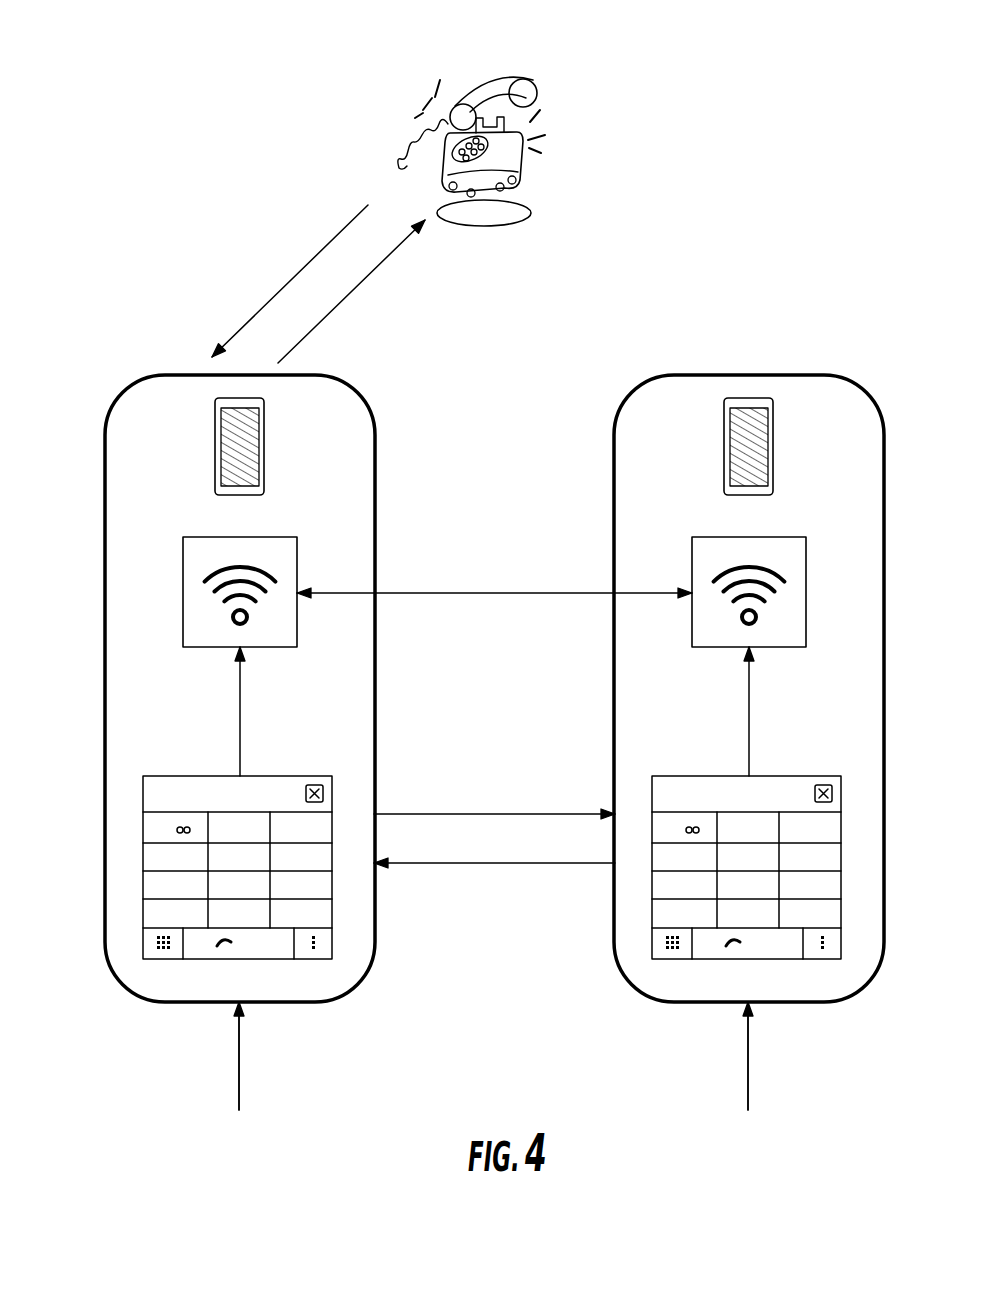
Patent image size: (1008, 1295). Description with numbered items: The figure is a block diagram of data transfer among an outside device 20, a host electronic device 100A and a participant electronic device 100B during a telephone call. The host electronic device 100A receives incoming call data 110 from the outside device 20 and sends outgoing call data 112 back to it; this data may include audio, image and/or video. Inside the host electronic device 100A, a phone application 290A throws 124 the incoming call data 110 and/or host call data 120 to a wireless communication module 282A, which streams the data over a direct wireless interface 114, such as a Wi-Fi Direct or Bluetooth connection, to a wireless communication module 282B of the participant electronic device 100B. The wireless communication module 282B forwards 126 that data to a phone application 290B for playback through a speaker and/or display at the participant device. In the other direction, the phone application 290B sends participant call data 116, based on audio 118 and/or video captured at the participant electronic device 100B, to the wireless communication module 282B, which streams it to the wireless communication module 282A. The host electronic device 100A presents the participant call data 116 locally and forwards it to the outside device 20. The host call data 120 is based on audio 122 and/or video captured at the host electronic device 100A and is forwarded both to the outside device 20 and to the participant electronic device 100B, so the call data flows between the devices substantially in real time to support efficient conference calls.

The outside device 20 is at (567, 72).
The incoming call data 110 is at (283, 287).
The outgoing call data 112 is at (353, 290).
The host electronic device 100A is at (322, 496).
The participant electronic device 100B is at (831, 496).
The wireless communication module 282A is at (183, 587).
The wireless communication module 282B is at (692, 612).
The direct wireless interface 114 is at (457, 593).
The participant call data 116 is at (505, 863).
The host call data 120 is at (497, 814).
The throw 124 is at (240, 695).
The forward 126 is at (749, 695).
The phone application 290A is at (143, 877).
The phone application 290B is at (652, 877).
The audio 122 is at (241, 1040).
The audio 118 is at (750, 1040).